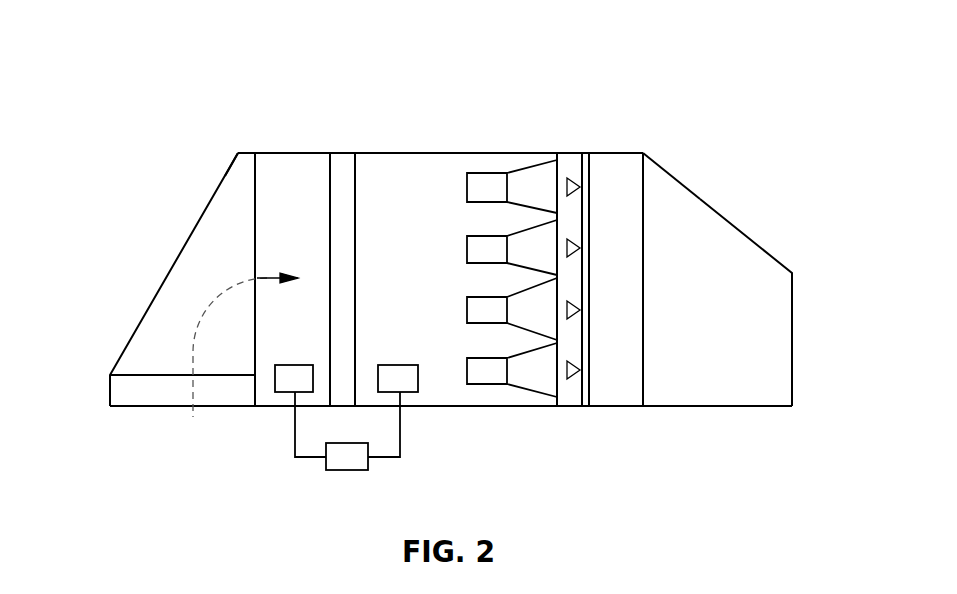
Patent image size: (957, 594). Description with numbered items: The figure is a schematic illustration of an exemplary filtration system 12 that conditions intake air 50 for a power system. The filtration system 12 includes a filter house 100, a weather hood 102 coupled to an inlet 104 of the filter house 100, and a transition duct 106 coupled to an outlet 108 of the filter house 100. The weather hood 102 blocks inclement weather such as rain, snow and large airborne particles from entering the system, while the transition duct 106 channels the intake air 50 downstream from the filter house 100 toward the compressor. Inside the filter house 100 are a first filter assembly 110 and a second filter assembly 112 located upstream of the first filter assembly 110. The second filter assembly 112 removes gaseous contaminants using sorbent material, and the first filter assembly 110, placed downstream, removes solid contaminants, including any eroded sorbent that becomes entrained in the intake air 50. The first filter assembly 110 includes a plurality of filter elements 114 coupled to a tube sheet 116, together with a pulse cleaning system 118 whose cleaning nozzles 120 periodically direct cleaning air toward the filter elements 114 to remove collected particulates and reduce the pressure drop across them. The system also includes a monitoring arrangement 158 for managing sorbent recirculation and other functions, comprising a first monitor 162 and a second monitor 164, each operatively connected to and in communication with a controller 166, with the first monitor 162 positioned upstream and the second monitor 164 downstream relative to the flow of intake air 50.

The filtration system 12 is at (152, 52).
The intake air 50 is at (212, 298).
The filter house 100 is at (370, 153).
The weather hood 102 is at (187, 242).
The inlet 104 is at (230, 162).
The transition duct 106 is at (740, 229).
The outlet 108 is at (672, 176).
The first filter assembly 110 is at (444, 166).
The second filter assembly 112 is at (314, 166).
The filter elements 114 is at (473, 248).
The tube sheet 116 is at (558, 388).
The pulse cleaning system 118 is at (590, 168).
The cleaning nozzles 120 is at (566, 248).
The monitoring arrangement 158 is at (400, 476).
The first monitor 162 is at (275, 387).
The second monitor 164 is at (418, 387).
The controller 166 is at (338, 472).